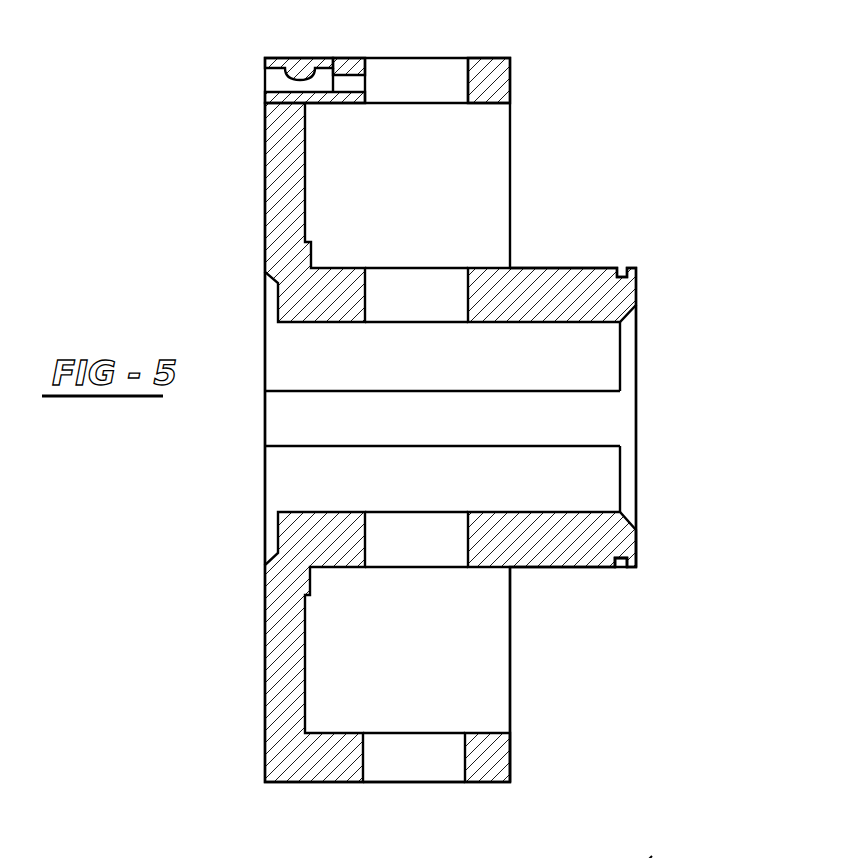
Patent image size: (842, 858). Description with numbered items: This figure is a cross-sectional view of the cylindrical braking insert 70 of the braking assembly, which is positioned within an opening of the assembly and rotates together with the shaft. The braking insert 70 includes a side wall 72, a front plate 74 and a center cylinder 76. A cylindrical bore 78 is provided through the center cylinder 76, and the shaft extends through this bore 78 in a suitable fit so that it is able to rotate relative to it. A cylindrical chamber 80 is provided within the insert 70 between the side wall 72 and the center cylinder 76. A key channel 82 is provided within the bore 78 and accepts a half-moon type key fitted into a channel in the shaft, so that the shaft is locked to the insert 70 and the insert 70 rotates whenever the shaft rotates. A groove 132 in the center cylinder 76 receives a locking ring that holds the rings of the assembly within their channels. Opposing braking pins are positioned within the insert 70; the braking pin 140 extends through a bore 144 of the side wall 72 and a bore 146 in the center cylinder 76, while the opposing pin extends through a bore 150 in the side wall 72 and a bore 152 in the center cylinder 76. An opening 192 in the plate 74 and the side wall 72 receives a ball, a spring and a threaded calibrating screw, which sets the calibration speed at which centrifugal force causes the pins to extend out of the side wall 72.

The braking insert 70 is at (592, 118).
The side wall 72 is at (503, 72).
The front plate 74 is at (283, 170).
The center cylinder 76 is at (552, 287).
The cylindrical bore 78 is at (577, 325).
The cylindrical chamber 80 is at (492, 567).
The key channel 82 is at (607, 446).
The groove 132 is at (620, 567).
The braking pin 140 is at (652, 856).
The bore 144 is at (468, 80).
The bore 146 is at (468, 290).
The bore 150 is at (465, 760).
The bore 152 is at (468, 540).
The opening 192 is at (316, 72).